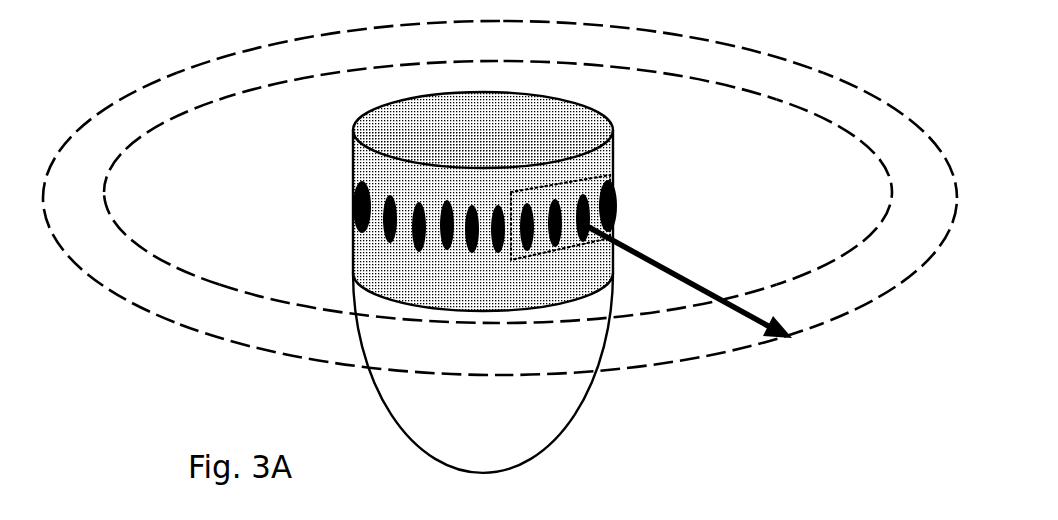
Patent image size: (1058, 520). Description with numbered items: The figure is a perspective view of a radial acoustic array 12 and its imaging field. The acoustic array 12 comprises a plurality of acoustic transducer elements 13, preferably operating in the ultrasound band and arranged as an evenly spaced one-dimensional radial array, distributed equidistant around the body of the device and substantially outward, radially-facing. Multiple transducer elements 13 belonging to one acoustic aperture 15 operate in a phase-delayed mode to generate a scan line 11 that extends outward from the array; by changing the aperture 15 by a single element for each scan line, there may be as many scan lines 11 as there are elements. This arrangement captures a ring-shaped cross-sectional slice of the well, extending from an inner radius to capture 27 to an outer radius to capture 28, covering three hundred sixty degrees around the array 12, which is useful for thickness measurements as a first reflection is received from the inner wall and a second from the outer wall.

The scan line 11 is at (699, 281).
The acoustic array 12 is at (483, 201).
The transducer element 13 is at (355, 212).
The acoustic aperture 15 is at (583, 208).
The inner radius to capture 27 is at (498, 192).
The outer radius to capture 28 is at (500, 198).